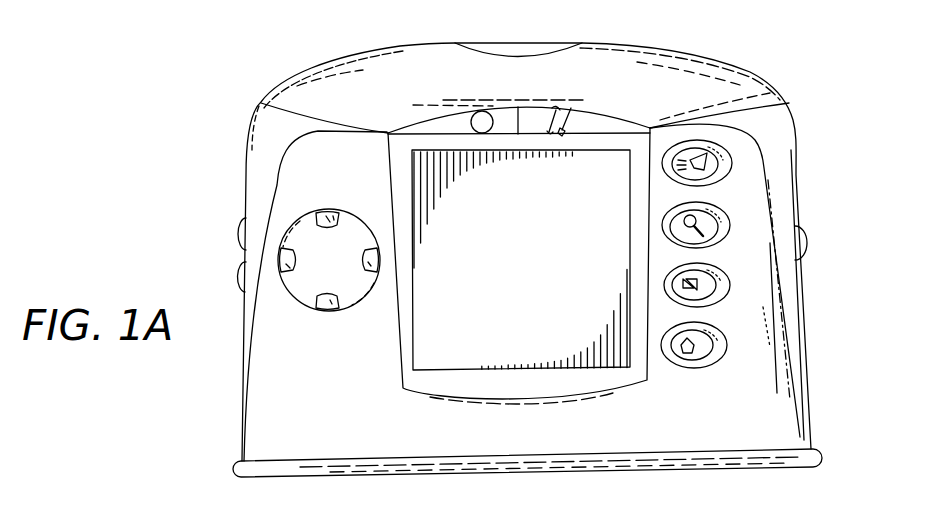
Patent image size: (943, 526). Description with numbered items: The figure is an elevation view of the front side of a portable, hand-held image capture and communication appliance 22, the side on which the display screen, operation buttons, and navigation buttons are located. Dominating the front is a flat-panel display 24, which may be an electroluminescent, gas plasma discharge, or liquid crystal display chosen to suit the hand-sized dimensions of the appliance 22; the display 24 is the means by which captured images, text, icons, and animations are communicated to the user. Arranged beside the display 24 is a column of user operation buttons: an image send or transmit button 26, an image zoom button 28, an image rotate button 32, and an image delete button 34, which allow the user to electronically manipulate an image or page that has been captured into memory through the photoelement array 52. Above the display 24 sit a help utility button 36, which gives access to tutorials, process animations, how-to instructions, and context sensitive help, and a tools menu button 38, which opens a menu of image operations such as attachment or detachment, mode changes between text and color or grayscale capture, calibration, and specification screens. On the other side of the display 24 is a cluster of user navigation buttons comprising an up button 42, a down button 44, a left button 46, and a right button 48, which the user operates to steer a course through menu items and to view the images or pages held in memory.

The image capture and communication appliance 22 is at (721, 35).
The flat-panel display 24 is at (448, 216).
The image send button 26 is at (730, 162).
The image zoom button 28 is at (722, 225).
The image rotate button 32 is at (722, 284).
The image delete button 34 is at (702, 343).
The help utility button 36 is at (482, 111).
The tools menu button 38 is at (548, 122).
The up button 42 is at (318, 214).
The down button 44 is at (323, 305).
The left button 46 is at (282, 257).
The right button 48 is at (364, 262).
The photoelement array 52 is at (280, 467).